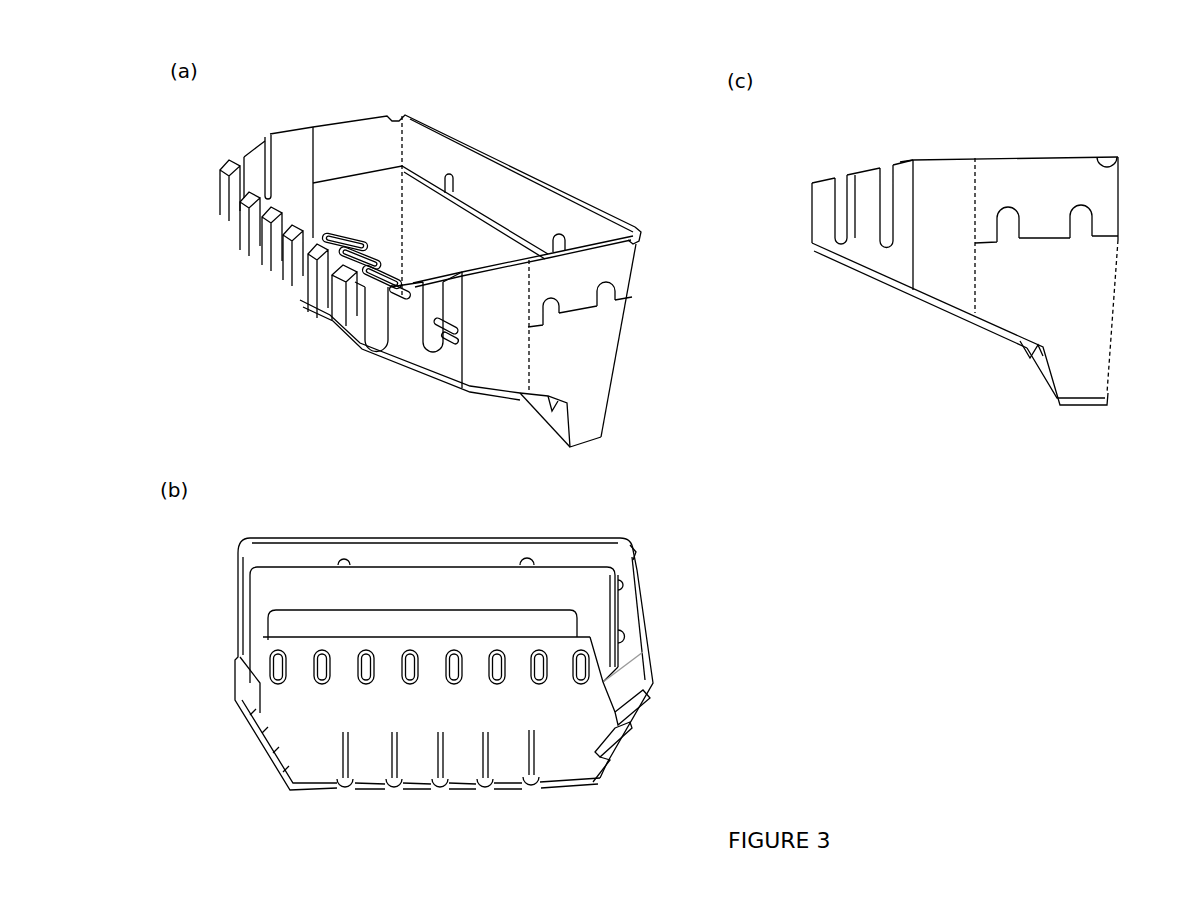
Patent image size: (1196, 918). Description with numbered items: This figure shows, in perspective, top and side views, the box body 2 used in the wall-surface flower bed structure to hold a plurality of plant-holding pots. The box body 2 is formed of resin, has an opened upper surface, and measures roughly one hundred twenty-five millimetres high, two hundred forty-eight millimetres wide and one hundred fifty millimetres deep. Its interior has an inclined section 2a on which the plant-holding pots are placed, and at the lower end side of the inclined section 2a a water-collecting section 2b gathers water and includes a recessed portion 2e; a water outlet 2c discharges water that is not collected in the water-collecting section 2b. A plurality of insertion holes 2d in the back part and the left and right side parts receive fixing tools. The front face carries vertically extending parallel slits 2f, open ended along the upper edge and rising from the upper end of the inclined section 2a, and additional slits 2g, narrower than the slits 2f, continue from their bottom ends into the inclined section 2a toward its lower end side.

The box body 2 is at (602, 173).
The inclined section 2a is at (313, 238).
The water-collecting section 2b is at (1088, 383).
The water outlet 2c is at (382, 272).
The insertion holes 2d is at (560, 237).
The recessed portion 2e is at (325, 625).
The slits 2f is at (307, 257).
The additional slits 2g is at (533, 742).